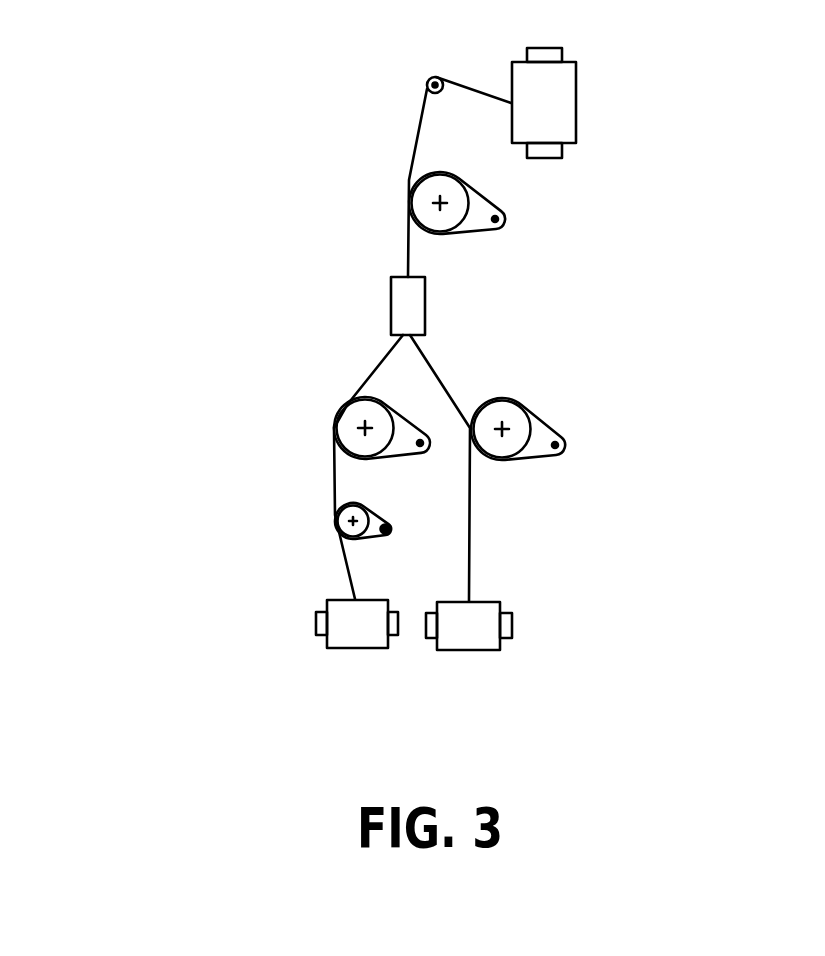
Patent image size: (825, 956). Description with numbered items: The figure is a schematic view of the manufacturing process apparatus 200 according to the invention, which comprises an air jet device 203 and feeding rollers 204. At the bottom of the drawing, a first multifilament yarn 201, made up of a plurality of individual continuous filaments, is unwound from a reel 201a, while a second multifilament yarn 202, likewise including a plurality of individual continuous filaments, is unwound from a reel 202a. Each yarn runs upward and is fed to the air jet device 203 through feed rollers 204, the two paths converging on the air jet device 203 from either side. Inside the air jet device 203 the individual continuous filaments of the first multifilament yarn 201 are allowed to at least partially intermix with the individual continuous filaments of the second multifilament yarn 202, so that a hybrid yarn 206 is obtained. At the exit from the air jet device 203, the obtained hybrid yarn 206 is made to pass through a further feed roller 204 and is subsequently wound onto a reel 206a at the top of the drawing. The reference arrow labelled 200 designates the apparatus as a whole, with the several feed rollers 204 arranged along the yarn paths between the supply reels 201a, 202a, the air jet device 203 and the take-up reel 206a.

The apparatus 200 is at (196, 222).
The first multifilament yarn 201 is at (345, 567).
The reel 201a is at (362, 635).
The second multifilament yarn 202 is at (472, 555).
The reel 202a is at (477, 627).
The air jet device 203 is at (412, 307).
The feed rollers 204 is at (420, 203).
The hybrid yarn 206 is at (415, 125).
The reel 206a is at (553, 113).